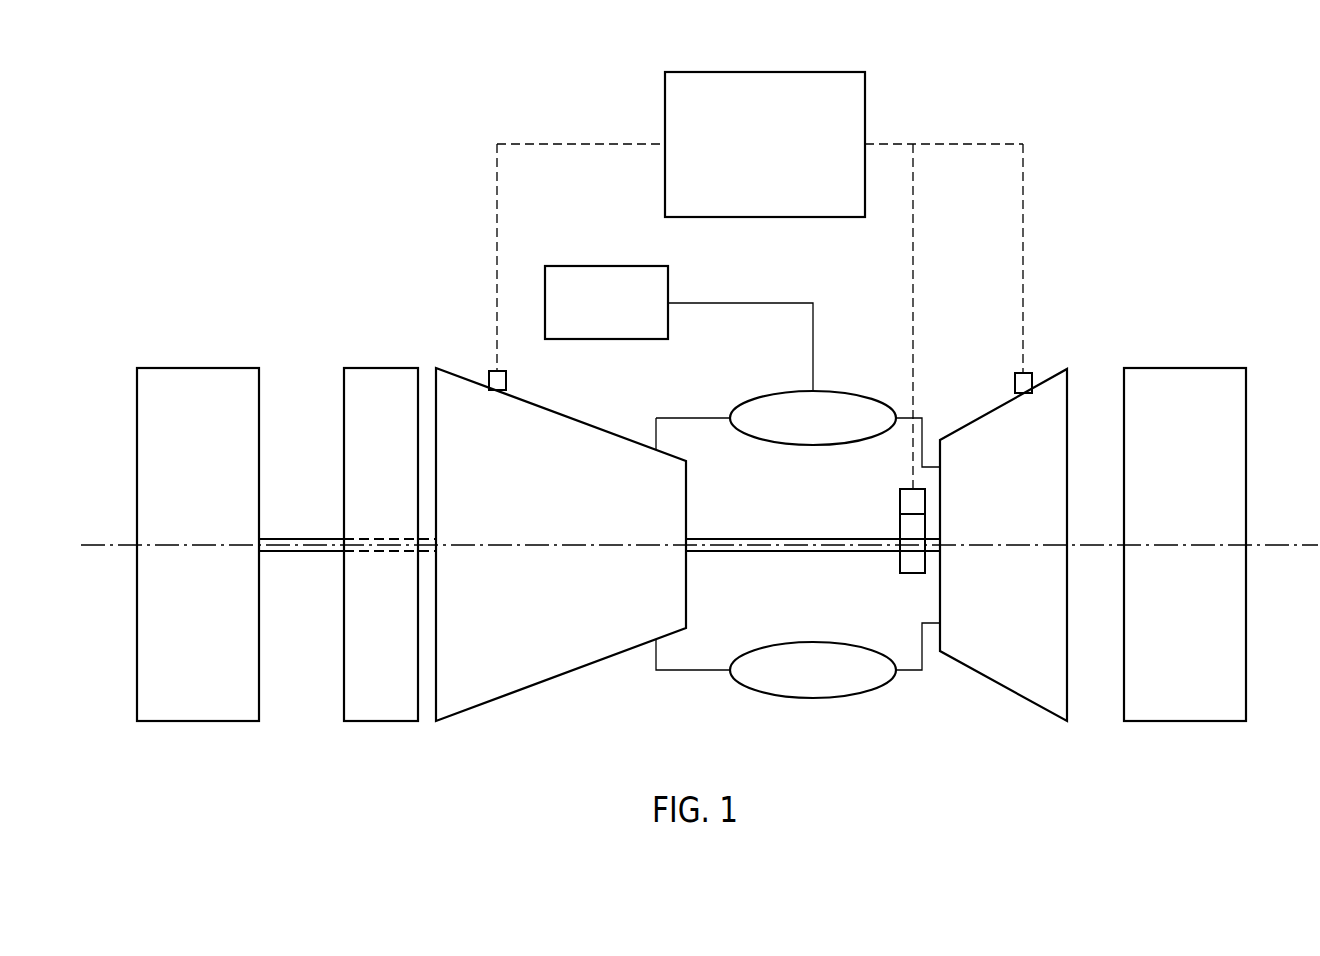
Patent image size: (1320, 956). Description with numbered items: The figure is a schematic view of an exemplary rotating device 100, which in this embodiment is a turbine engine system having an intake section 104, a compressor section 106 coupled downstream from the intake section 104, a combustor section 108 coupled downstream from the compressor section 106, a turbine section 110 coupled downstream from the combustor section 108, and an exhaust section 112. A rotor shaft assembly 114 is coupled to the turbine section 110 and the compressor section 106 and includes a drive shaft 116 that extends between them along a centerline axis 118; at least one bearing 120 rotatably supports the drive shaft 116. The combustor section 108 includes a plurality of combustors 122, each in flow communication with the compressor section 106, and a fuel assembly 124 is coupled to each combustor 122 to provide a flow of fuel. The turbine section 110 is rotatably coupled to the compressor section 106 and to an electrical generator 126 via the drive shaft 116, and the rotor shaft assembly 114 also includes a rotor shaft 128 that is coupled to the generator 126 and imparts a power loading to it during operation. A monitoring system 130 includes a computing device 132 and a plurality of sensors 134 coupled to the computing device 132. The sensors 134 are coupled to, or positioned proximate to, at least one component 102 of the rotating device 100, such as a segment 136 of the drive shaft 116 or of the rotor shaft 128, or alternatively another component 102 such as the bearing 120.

The rotating device 100 is at (343, 181).
The component 102 is at (880, 537).
The intake section 104 is at (381, 368).
The compressor section 106 is at (452, 368).
The combustor section 108 is at (798, 509).
The turbine section 110 is at (1057, 369).
The exhaust section 112 is at (1183, 368).
The rotor shaft assembly 114 is at (813, 526).
The drive shaft 116 is at (702, 537).
The centerline axis 118 is at (1090, 540).
The bearing 120 is at (900, 573).
The combustor 122 is at (762, 390).
The fuel assembly 124 is at (605, 266).
The electrical generator 126 is at (199, 368).
The rotor shaft 128 is at (303, 532).
The monitoring system 130 is at (760, 297).
The computing device 132 is at (766, 72).
The sensors 134 is at (506, 382).
The segment 136 is at (302, 556).